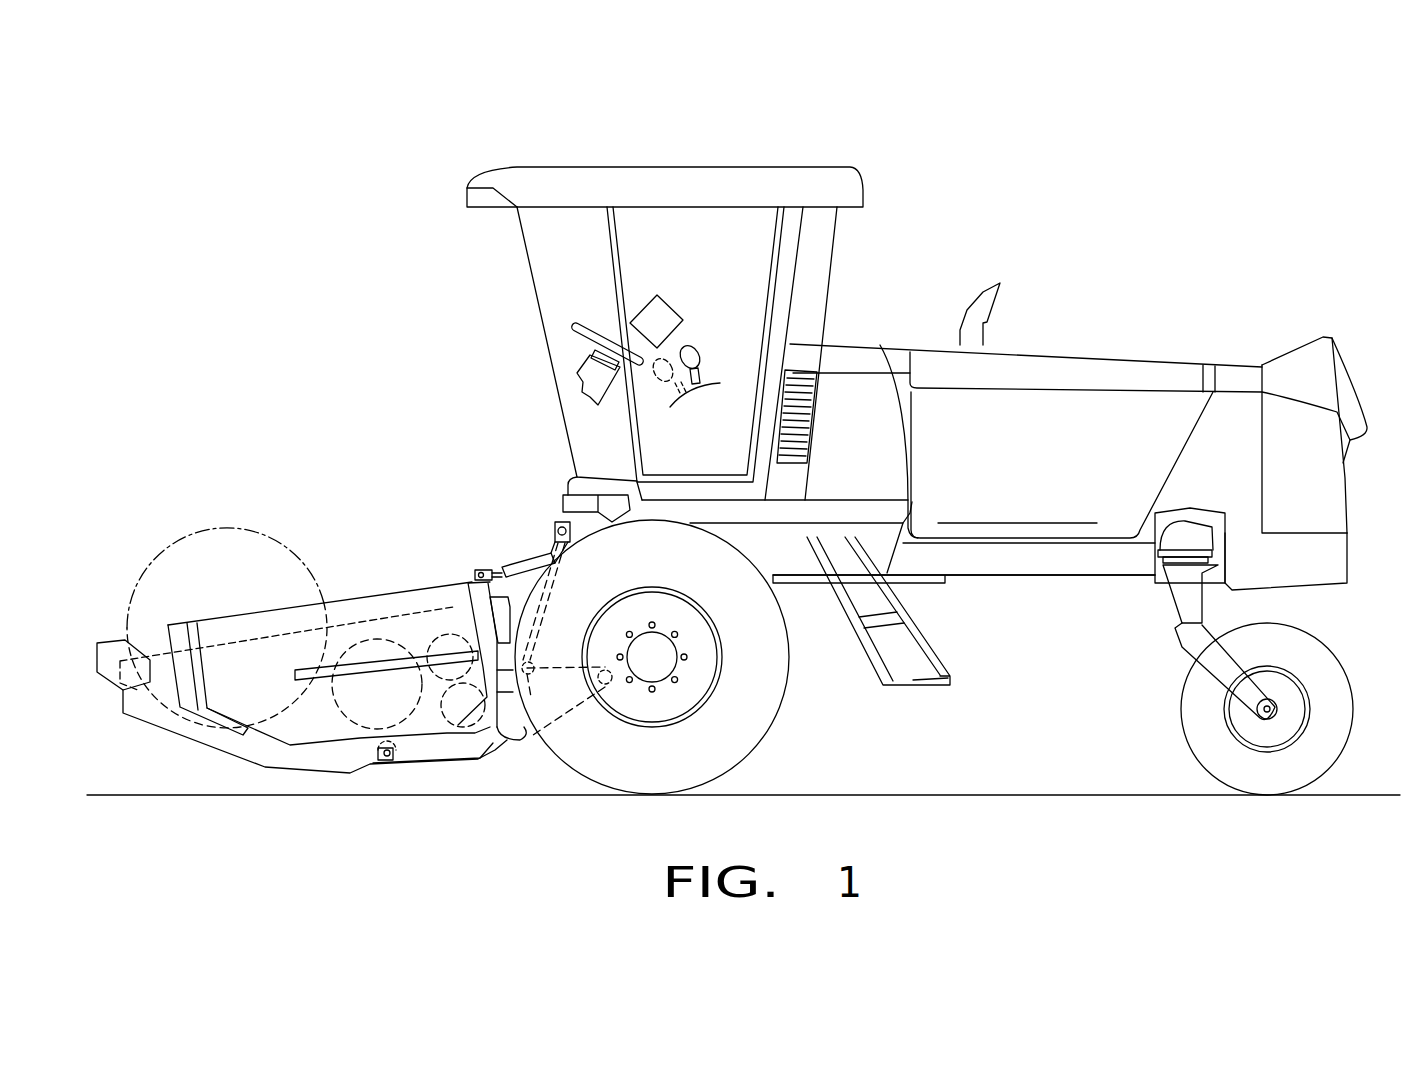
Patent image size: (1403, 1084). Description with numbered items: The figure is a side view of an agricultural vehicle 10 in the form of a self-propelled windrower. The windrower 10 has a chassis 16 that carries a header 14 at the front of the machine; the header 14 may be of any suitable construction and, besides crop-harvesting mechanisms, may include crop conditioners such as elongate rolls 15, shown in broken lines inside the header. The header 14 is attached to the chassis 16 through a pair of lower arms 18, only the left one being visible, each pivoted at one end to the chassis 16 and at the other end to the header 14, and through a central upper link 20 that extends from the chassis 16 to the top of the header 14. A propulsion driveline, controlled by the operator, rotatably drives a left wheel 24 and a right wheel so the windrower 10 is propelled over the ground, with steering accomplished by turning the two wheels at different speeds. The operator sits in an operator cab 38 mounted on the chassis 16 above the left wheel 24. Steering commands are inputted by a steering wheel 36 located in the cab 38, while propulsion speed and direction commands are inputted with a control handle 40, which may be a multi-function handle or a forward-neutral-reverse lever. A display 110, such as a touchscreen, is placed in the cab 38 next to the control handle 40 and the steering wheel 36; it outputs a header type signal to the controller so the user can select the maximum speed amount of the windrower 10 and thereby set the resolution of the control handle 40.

The agricultural vehicle 10 is at (1280, 204).
The header 14 is at (351, 582).
The elongate rolls 15 is at (450, 636).
The chassis 16 is at (1032, 575).
The lower arms 18 is at (490, 748).
The central upper link 20 is at (520, 562).
The left wheel 24 is at (770, 720).
The steering wheel 36 is at (583, 323).
The operator cab 38 is at (719, 168).
The control handle 40 is at (695, 348).
The display 110 is at (667, 297).